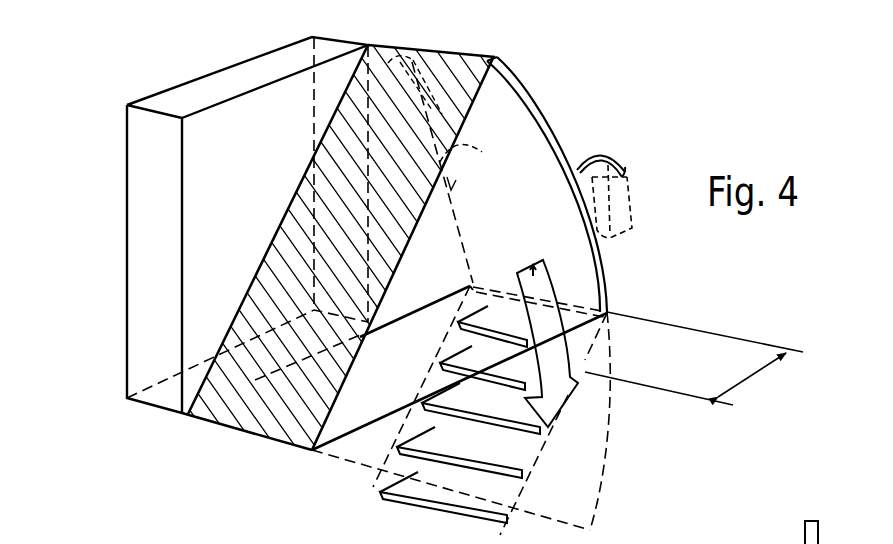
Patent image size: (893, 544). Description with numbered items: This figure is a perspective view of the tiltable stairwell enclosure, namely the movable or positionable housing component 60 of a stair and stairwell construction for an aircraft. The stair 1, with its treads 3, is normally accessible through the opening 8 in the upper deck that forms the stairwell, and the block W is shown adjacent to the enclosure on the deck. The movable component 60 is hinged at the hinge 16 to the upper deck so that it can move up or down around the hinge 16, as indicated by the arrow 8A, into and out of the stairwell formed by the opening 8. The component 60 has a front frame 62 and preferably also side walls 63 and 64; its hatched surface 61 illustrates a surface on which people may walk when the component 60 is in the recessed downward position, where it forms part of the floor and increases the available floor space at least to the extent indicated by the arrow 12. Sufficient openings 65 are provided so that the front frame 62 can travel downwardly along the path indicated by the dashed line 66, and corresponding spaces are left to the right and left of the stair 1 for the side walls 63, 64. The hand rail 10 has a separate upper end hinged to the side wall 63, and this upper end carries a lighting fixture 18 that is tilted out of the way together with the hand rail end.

The web / workpiece block W is at (143, 243).
The stair 1 is at (418, 497).
The treads 3 is at (508, 458).
The opening 8 is at (418, 333).
The arrow 8A is at (585, 362).
The hand rail 10 is at (603, 157).
The arrow 12 is at (753, 373).
The hinge 16 is at (282, 447).
The lighting fixture 18 is at (620, 193).
The movable housing component 60 is at (543, 80).
The hatched surface 61 is at (243, 419).
The front frame 62 is at (550, 133).
The side wall 63 is at (345, 427).
The side wall 64 is at (435, 225).
The openings 65 is at (475, 281).
The dashed line 66 is at (599, 472).